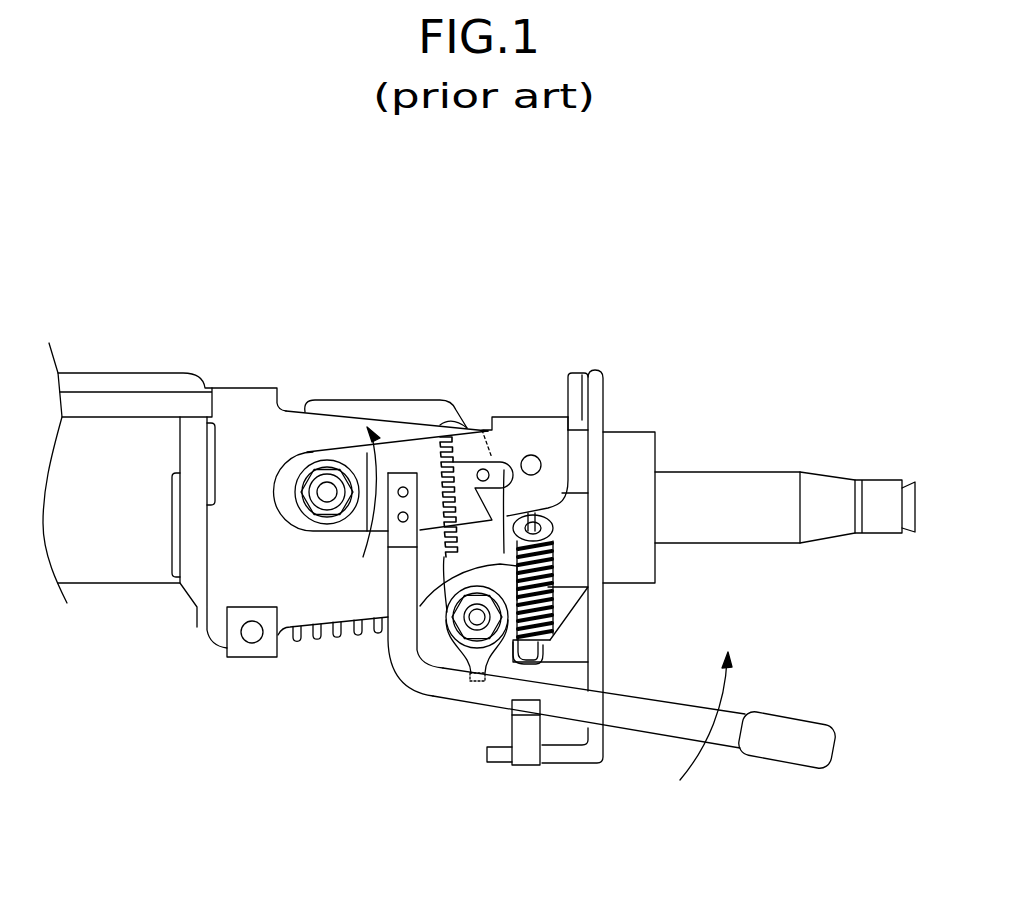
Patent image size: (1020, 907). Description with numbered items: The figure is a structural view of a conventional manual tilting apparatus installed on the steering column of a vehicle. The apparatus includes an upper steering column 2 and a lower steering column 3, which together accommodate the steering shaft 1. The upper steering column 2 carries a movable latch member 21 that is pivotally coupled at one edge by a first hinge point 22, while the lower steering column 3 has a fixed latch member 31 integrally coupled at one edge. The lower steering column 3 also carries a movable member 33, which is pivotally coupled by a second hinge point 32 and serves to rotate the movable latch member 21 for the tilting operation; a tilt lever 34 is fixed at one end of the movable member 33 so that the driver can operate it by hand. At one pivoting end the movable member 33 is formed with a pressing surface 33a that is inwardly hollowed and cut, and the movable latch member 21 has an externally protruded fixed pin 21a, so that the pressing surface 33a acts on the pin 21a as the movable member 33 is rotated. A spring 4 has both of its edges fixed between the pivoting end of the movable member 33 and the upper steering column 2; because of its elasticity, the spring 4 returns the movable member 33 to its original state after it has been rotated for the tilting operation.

The steering shaft 1 is at (757, 490).
The upper steering column 2 is at (642, 462).
The lower steering column 3 is at (144, 436).
The spring 4 is at (552, 612).
The movable latch member 21 is at (468, 562).
The fixed pin 21a is at (483, 469).
The first hinge point 22 is at (477, 625).
The fixed latch member 31 is at (430, 560).
The second hinge point 32 is at (327, 482).
The movable member 33 is at (403, 458).
The pressing surface 33a is at (504, 470).
The tilt lever 34 is at (638, 728).